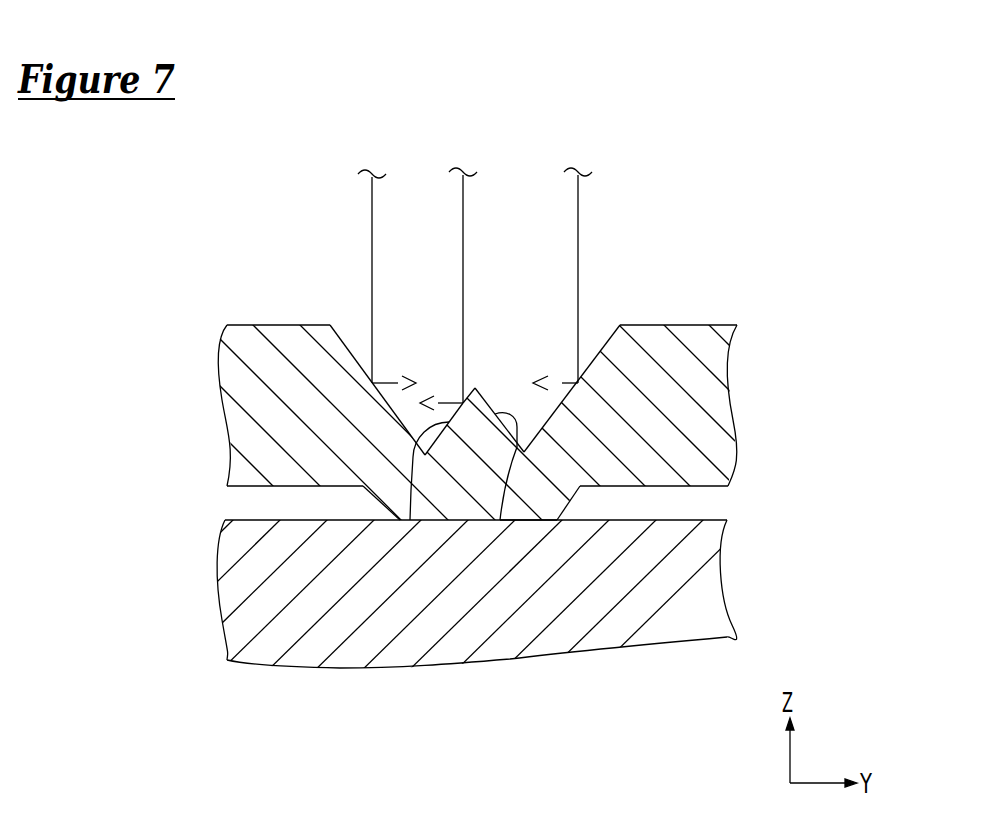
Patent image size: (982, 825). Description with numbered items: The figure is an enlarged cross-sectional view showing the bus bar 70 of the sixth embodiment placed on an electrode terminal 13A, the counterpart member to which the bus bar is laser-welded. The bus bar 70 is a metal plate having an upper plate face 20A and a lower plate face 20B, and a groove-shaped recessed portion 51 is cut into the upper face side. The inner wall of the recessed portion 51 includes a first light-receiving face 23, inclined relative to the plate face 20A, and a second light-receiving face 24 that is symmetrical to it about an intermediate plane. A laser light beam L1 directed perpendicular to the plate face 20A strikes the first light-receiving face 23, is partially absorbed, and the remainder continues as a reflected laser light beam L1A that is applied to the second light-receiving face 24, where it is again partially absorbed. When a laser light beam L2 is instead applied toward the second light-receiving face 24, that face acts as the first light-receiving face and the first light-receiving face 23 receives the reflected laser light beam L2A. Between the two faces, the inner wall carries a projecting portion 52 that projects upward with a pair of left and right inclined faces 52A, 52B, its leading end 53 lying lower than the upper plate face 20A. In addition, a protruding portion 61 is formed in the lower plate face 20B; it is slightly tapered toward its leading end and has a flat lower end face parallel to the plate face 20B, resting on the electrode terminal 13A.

The electrode terminal 13A is at (680, 583).
The upper plate face 20A is at (697, 326).
The lower plate face 20B is at (657, 487).
The first light-receiving face 23 is at (691, 375).
The second light-receiving face 24 is at (341, 338).
The recessed portion 51 is at (472, 211).
The projecting portion 52 is at (480, 478).
The inclined face 52A is at (410, 520).
The inclined face 52B is at (500, 520).
The leading end 53 is at (473, 388).
The protruding portion 61 is at (510, 450).
The bus bar 70 is at (703, 407).
The laser light beam L1 is at (465, 200).
The laser light beam L2 is at (372, 205).
The reflected laser light beam L1A is at (445, 397).
The reflected laser light beam L2A is at (393, 378).